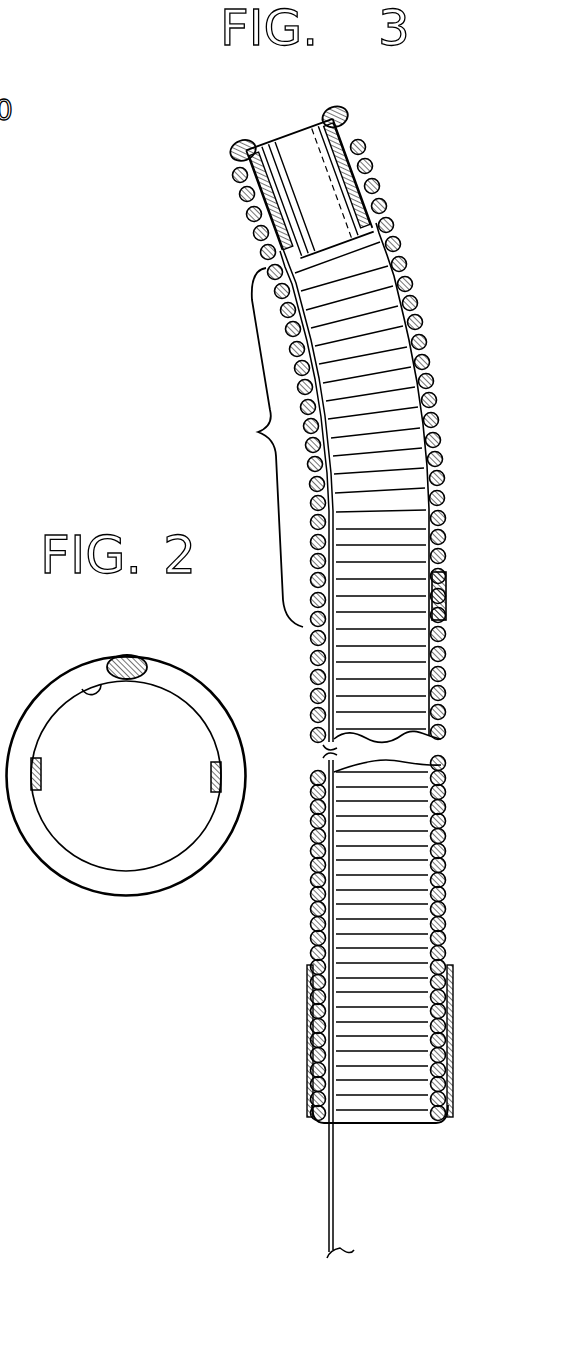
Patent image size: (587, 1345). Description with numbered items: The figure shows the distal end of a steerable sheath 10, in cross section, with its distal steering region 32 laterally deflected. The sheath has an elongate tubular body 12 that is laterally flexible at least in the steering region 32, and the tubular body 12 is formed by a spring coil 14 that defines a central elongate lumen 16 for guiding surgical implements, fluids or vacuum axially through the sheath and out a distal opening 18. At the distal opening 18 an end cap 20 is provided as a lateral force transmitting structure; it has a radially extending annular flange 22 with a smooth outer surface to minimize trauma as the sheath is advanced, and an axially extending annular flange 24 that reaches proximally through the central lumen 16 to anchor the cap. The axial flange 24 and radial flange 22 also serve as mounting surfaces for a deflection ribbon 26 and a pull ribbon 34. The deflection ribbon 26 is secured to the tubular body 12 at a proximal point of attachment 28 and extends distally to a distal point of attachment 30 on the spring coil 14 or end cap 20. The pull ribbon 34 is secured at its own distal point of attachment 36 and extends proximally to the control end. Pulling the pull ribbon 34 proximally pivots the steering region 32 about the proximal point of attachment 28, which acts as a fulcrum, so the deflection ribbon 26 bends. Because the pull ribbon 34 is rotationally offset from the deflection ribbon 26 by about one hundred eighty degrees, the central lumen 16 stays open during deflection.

In FIG. 3, the steerable sheath 10 is at (437, 353).
In FIG. 3, the elongate tubular body 12 is at (310, 687).
In FIG. 3, the spring coil portion 14 is at (443, 792).
In FIG. 2, the spring coil portion 14 is at (170, 677).
In FIG. 3, the central elongate lumen 16 is at (423, 695).
In FIG. 2, the central elongate lumen 16 is at (88, 691).
In FIG. 3, the distal opening 18 is at (314, 112).
In FIG. 3, the end cap 20 is at (332, 188).
In FIG. 3, the radially extending annular flange 22 is at (245, 147).
In FIG. 3, the axially extending annular flange 24 is at (374, 205).
In FIG. 3, the deflection ribbon 26 is at (425, 441).
In FIG. 2, the deflection ribbon 26 is at (212, 778).
In FIG. 3, the proximal point of attachment 28 is at (441, 596).
In FIG. 3, the distal point of attachment 30 is at (352, 122).
In FIG. 3, the distal steering region 32 is at (263, 447).
In FIG. 3, the pull ribbon 34 is at (331, 904).
In FIG. 2, the pull ribbon 34 is at (42, 771).
In FIG. 3, the distal point of attachment 36 is at (201, 223).